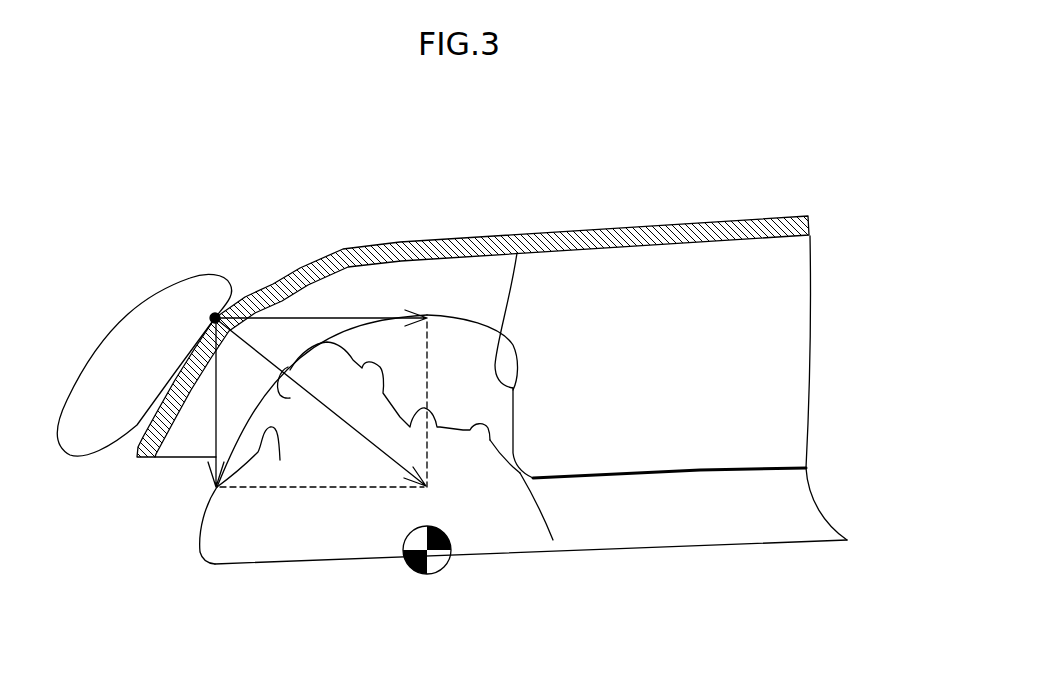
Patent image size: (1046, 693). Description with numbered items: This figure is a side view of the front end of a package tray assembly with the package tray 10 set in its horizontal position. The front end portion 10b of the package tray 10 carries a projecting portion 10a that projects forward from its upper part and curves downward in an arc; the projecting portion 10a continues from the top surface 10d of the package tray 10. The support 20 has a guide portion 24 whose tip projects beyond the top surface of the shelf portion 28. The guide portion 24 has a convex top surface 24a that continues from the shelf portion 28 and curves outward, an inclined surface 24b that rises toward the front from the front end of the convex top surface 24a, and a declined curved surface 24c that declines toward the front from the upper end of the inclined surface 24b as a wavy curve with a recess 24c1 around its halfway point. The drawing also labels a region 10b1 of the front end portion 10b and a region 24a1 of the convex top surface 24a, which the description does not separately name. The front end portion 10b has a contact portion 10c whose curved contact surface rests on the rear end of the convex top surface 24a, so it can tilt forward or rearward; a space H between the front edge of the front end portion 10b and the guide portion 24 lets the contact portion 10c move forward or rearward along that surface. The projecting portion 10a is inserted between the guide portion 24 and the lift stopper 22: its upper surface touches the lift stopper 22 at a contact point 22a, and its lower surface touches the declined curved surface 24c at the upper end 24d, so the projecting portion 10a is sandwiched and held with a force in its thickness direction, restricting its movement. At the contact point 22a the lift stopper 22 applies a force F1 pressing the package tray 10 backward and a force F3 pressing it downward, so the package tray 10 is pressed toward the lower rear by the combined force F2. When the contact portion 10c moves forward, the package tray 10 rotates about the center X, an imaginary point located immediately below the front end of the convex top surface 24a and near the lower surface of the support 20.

The package tray 10 is at (769, 197).
The projecting portion 10a is at (352, 287).
The front end portion 10b is at (553, 380).
The panel flange 10b1 is at (517, 253).
The contact portion 10c is at (553, 540).
The top surface 10d is at (663, 227).
The support 20 is at (632, 572).
The lift stopper 22 is at (108, 292).
The contact point 22a is at (215, 317).
The guide portion 24 is at (377, 530).
The convex top surface 24a is at (490, 440).
The seal lip tip 24a1 is at (437, 427).
The inclined surface 24b is at (372, 392).
The declined curved surface 24c is at (290, 398).
The recess 24c1 is at (280, 460).
The upper end 24d is at (288, 367).
The shelf portion 28 is at (728, 523).
The force F1 is at (326, 383).
The combined force F2 is at (337, 412).
The force F3 is at (316, 422).
The space H is at (468, 336).
The center of rotation X is at (444, 566).